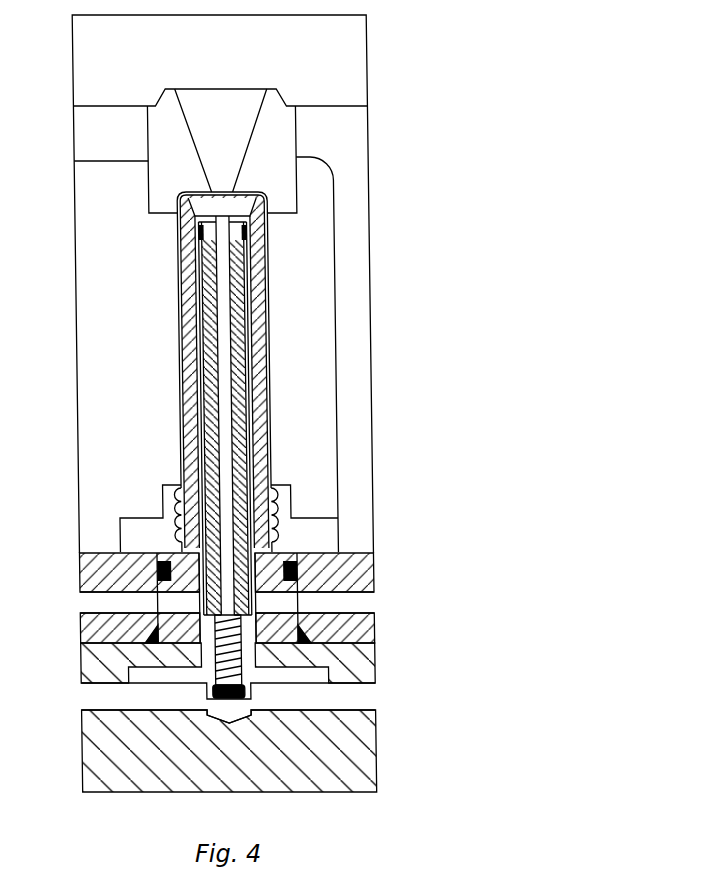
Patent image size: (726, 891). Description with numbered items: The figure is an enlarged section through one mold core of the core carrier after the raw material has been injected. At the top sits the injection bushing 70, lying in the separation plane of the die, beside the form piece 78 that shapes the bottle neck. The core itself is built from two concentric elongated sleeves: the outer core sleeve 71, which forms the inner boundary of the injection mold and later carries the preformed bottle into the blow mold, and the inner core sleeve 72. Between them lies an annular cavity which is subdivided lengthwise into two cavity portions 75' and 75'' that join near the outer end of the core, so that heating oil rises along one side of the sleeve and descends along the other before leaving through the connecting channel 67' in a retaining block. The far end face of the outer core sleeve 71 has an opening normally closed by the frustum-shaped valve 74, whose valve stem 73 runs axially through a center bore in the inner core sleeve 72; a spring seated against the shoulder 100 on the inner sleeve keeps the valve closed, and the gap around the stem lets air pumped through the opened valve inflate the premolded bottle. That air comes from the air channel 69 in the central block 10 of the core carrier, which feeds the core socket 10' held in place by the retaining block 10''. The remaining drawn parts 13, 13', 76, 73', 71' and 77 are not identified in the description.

The injection bushing 70 is at (233, 125).
The frustum-shaped valve 74 is at (223, 207).
The seal ring 77 is at (246, 231).
The outer core sleeve 71 is at (307, 418).
The inner core sleeve 72 is at (236, 278).
The valve stem 73 is at (317, 415).
The outer tube 13 is at (297, 372).
The cavity portion 75' is at (335, 382).
The cavity portion 75'' is at (115, 382).
The threaded portion of tube 13' is at (298, 492).
The form piece for the bottle neck 78 is at (306, 532).
The support plate 76 is at (293, 562).
The rod end bore 73' is at (311, 595).
The connecting channel 67' is at (251, 598).
The retaining block 10'' is at (159, 598).
The core socket 10' is at (166, 642).
The base block 71' is at (252, 663).
The shoulder 100 is at (207, 695).
The air channel 69 is at (338, 697).
The central block 10 is at (251, 751).